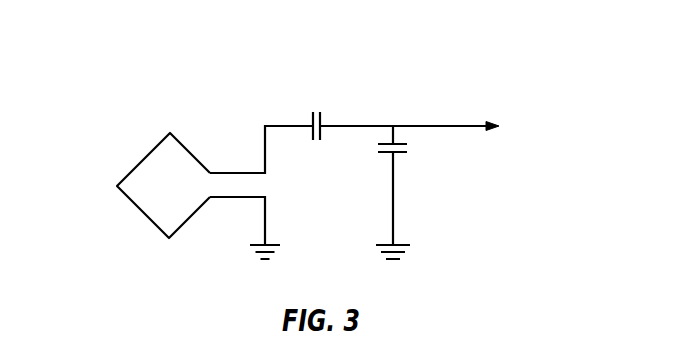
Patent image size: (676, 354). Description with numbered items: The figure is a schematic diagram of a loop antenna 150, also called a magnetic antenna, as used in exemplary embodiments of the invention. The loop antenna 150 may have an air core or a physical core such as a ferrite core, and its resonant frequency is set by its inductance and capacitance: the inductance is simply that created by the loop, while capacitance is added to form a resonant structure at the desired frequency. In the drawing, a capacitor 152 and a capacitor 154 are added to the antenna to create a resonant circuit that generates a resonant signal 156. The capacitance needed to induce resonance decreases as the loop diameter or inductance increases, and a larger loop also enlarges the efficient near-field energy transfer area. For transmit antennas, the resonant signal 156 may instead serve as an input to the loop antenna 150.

The loop antenna 150 is at (143, 160).
The capacitor 152 is at (322, 116).
The capacitor 154 is at (398, 156).
The resonant signal 156 is at (423, 125).